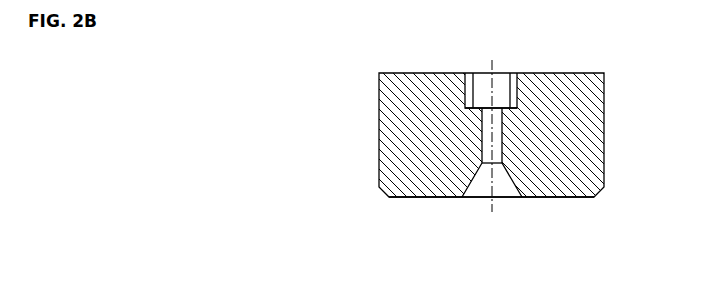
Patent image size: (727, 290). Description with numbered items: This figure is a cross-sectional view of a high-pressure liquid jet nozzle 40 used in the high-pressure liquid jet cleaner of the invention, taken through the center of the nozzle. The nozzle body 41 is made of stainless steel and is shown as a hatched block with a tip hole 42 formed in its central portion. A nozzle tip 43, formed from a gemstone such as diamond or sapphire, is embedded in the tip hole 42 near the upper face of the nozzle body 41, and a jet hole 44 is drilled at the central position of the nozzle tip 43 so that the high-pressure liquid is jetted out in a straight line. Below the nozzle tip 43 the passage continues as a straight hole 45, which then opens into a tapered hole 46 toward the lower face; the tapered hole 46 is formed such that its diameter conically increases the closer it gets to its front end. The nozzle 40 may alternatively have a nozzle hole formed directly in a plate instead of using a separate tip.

The high-pressure liquid jet nozzle 40 is at (605, 92).
The nozzle body 41 is at (573, 183).
The tip hole 42 is at (517, 92).
The nozzle tip 43 is at (475, 93).
The jet hole 44 is at (495, 85).
The straight hole 45 is at (481, 143).
The tapered hole 46 is at (478, 188).